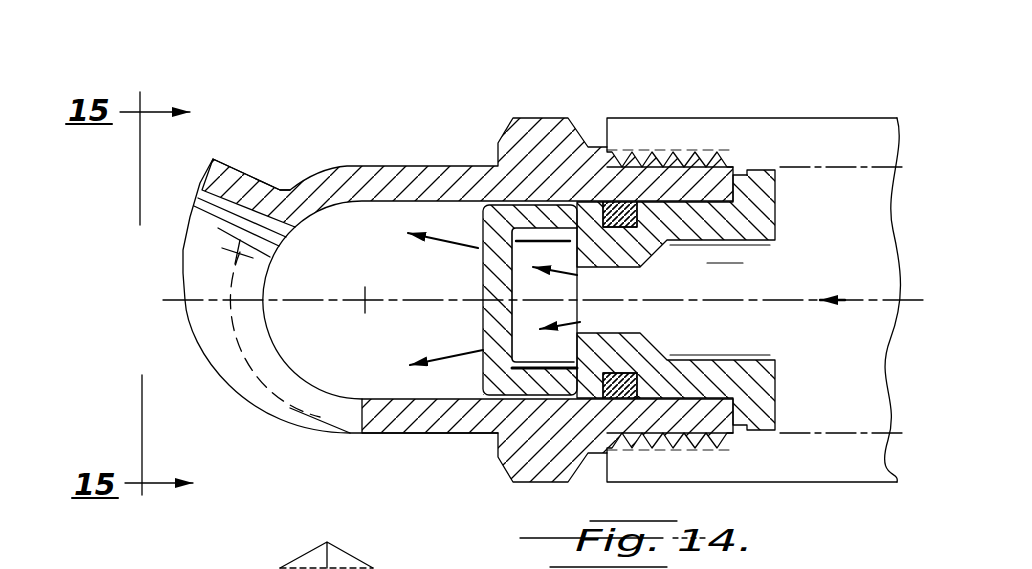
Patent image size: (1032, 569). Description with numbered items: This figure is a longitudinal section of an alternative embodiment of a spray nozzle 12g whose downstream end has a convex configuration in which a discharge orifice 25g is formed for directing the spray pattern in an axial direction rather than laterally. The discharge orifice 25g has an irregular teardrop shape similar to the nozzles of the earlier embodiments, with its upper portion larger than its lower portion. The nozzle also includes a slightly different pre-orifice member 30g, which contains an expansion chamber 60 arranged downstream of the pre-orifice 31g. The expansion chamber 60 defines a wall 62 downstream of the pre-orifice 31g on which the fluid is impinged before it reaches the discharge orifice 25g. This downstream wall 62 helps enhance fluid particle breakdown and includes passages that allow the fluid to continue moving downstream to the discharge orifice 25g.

The spray nozzle 12g is at (553, 97).
The discharge orifice 25g is at (166, 287).
The pre-orifice member 30g is at (682, 210).
The pre-orifice 31g is at (578, 322).
The expansion chamber 60 is at (545, 252).
The downstream wall 62 is at (483, 320).